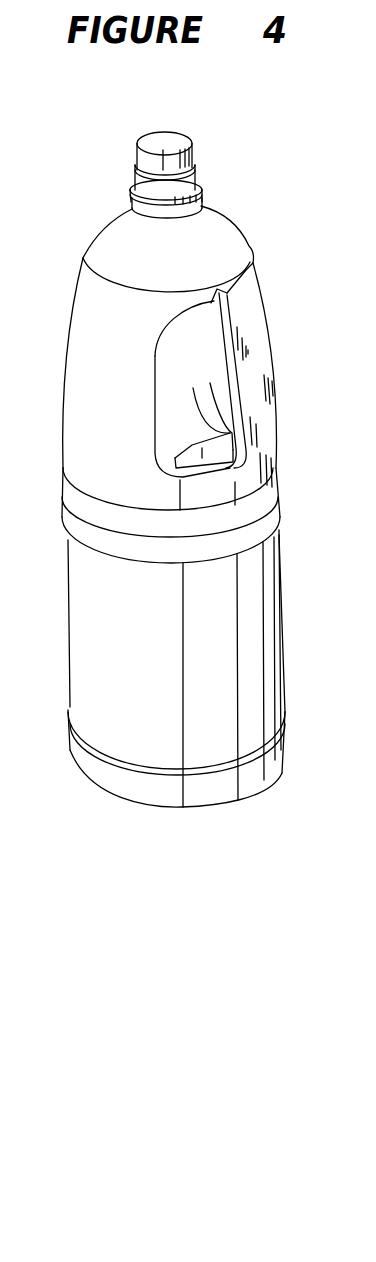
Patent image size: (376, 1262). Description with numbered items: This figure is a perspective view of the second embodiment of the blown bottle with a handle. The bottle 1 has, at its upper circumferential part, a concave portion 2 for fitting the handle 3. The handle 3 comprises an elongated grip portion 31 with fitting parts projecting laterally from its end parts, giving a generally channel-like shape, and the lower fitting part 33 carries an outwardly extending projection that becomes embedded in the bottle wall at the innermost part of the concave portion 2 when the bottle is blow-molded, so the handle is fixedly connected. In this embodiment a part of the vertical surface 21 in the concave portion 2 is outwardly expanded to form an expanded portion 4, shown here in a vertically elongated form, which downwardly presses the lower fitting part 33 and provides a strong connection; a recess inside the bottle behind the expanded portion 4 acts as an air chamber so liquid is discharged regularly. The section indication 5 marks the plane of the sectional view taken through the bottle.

The bottle 1 is at (76, 281).
The concave portion 2 is at (175, 384).
The vertical surface 21 is at (203, 331).
The handle 3 is at (272, 342).
The grip portion 31 is at (278, 389).
The expanded portion 4 is at (213, 418).
The lower fitting part 33 is at (220, 471).
The section line 5- 5 is at (163, 123).